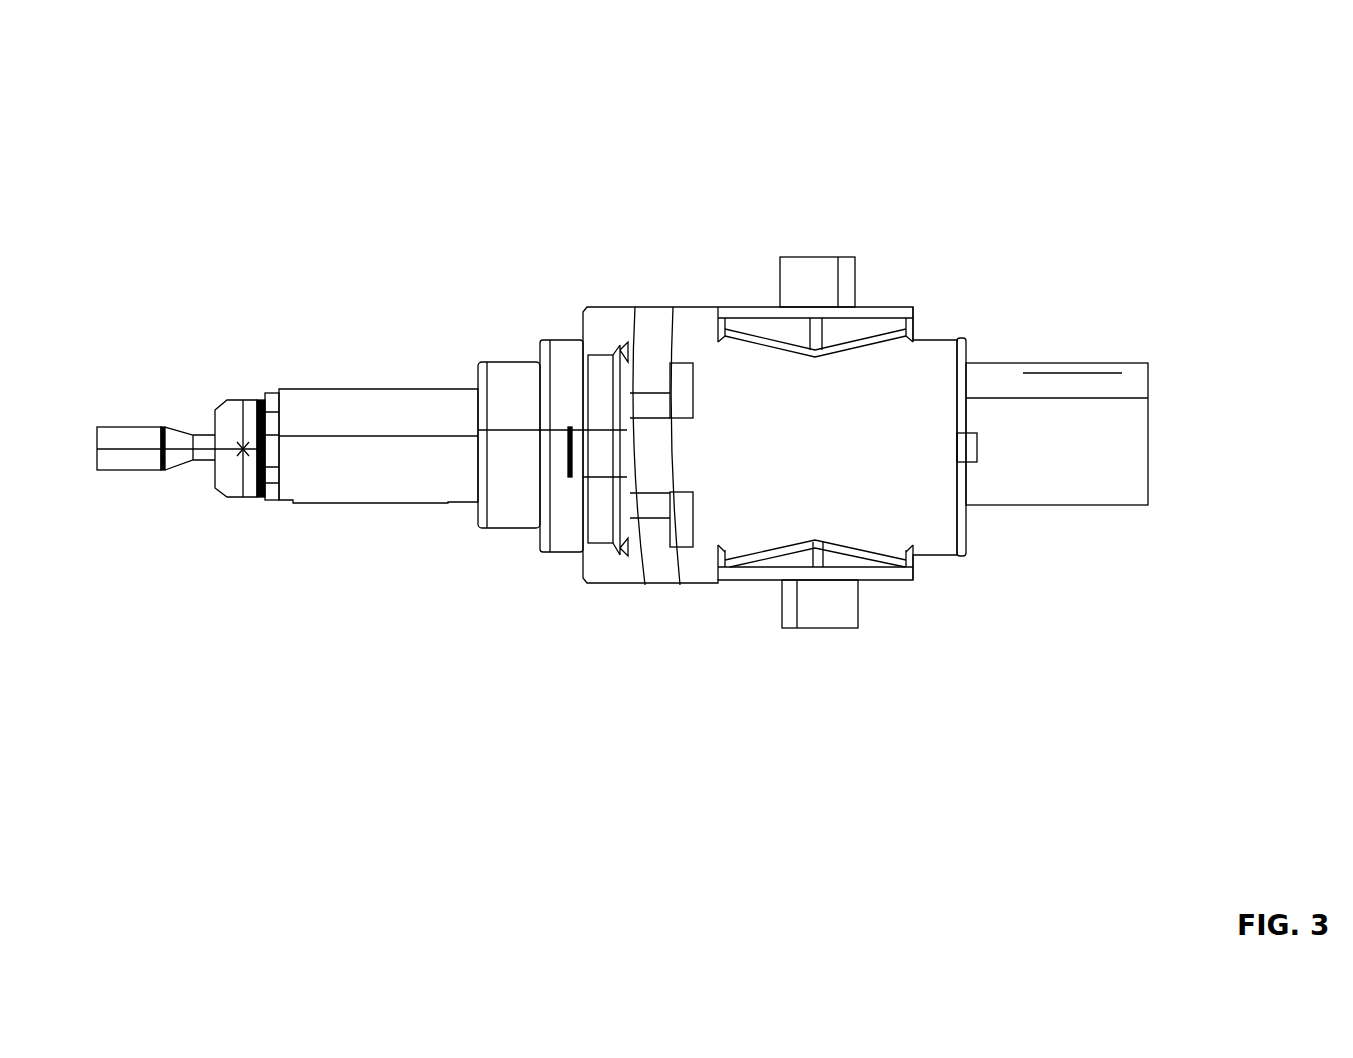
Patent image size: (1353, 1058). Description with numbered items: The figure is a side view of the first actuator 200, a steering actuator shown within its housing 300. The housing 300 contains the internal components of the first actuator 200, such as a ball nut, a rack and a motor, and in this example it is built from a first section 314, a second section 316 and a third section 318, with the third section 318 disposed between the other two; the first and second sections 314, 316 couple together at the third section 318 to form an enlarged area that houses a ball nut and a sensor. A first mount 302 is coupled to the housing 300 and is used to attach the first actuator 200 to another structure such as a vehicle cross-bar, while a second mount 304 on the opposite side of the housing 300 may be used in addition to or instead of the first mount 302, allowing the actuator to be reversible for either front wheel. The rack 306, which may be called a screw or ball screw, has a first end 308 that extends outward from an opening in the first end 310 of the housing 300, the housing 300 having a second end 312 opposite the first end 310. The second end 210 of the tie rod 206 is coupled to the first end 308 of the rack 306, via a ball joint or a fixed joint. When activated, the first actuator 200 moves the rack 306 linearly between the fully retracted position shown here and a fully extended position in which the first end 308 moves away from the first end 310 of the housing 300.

The first actuator 200 is at (1022, 48).
The tie rod 206 is at (160, 428).
The second end 210 is at (207, 462).
The housing 300 is at (487, 362).
The first mount 302 is at (850, 257).
The second mount 304 is at (860, 618).
The rack 306 is at (268, 497).
The first end 308 is at (217, 409).
The first end 310 is at (278, 392).
The second end 312 is at (1152, 385).
The first section 314 is at (380, 389).
The second section 316 is at (988, 362).
The third section 318 is at (597, 306).